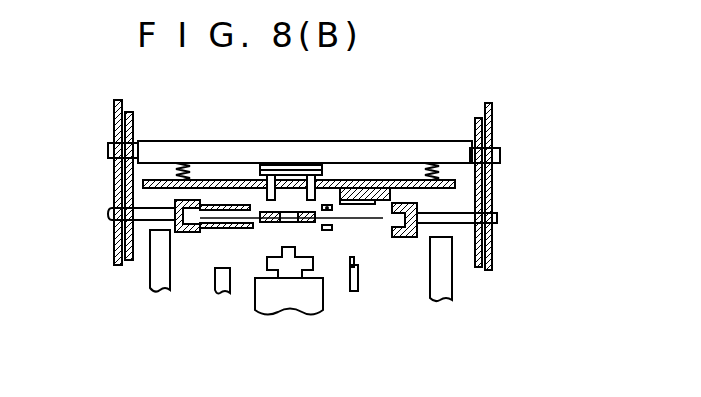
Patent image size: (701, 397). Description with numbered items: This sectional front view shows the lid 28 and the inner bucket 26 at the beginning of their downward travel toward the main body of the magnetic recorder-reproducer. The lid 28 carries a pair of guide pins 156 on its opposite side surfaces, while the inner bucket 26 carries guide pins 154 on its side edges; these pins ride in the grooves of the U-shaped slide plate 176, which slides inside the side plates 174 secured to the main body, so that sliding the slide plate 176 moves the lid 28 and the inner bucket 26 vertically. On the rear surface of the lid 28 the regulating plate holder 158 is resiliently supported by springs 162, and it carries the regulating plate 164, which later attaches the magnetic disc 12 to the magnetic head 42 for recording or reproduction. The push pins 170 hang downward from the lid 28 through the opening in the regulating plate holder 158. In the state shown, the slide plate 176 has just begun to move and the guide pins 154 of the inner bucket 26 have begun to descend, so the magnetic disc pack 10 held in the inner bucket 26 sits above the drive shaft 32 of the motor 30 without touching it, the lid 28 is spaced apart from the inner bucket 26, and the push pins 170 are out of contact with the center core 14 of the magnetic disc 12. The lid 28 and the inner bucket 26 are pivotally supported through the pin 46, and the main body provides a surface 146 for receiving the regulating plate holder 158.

The lid 28 is at (265, 141).
The guide pins 156 is at (108, 148).
The side plates 174 is at (120, 101).
The slide plate 176 is at (132, 113).
The regulating plate holder 158 is at (225, 180).
The springs 162 is at (184, 163).
The push pins 170 is at (311, 175).
The regulating plate 164 is at (365, 188).
The guide pins 154 is at (108, 217).
The magnetic disc pack 10 is at (218, 228).
The center core 14 is at (272, 222).
The magnetic disc 12 is at (363, 219).
The inner bucket 26 is at (400, 237).
The drive shaft 32 is at (296, 268).
The motor 30 is at (320, 305).
The magnetic head 42 is at (358, 282).
The pin 46 is at (440, 245).
The surface for receiving the regulating plate holder 146 is at (158, 240).